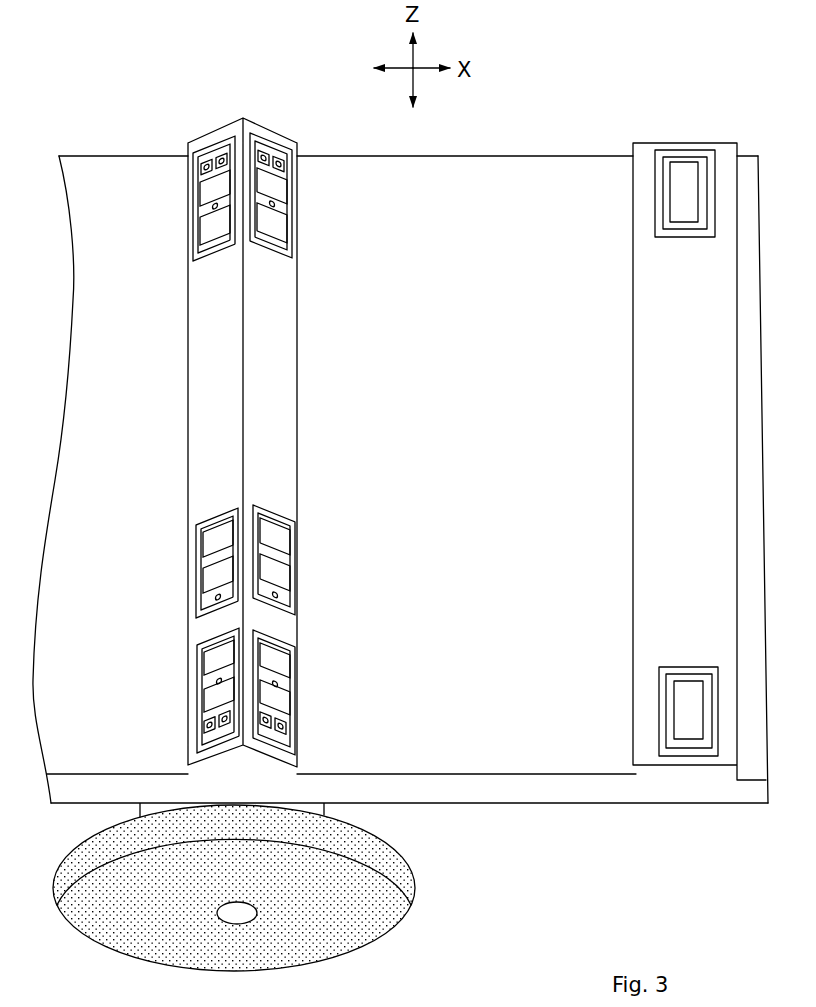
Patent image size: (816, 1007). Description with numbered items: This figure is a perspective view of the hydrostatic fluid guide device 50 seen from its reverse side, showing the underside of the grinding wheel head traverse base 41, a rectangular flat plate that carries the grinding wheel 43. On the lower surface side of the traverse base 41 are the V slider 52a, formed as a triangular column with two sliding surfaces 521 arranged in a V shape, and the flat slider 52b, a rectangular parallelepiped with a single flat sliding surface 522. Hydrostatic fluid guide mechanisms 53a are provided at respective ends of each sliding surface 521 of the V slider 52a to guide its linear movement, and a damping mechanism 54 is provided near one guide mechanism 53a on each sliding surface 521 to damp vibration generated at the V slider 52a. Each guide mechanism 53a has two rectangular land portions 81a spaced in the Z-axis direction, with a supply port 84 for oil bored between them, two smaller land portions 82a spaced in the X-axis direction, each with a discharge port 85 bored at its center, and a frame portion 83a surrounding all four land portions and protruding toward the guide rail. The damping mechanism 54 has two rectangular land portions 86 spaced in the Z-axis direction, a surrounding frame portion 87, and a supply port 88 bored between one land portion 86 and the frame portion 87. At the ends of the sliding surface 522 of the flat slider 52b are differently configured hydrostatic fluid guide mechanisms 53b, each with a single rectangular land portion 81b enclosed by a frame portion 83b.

The hydrostatic fluid guide device 50 is at (163, 115).
The grinding wheel head traverse base 41 is at (468, 800).
The grinding wheel 43 is at (372, 930).
The V slider 52a is at (257, 412).
The flat slider 52b is at (642, 424).
The sliding surfaces 521 is at (220, 327).
The sliding surface 522 is at (652, 325).
The hydrostatic fluid guide mechanisms 53a is at (302, 445).
The hydrostatic fluid guide mechanisms 53b is at (575, 453).
The damping mechanism 54 is at (291, 559).
The frame portion 83a is at (278, 642).
The frame portion 83b is at (658, 173).
The land portions 81a is at (277, 663).
The land portion 81b is at (677, 207).
The supply port 84 is at (275, 682).
The land portions 82a is at (266, 721).
The discharge ports 85 is at (225, 723).
The frame portion 87 is at (278, 518).
The land portions 86 is at (278, 543).
The supply port 88 is at (275, 597).